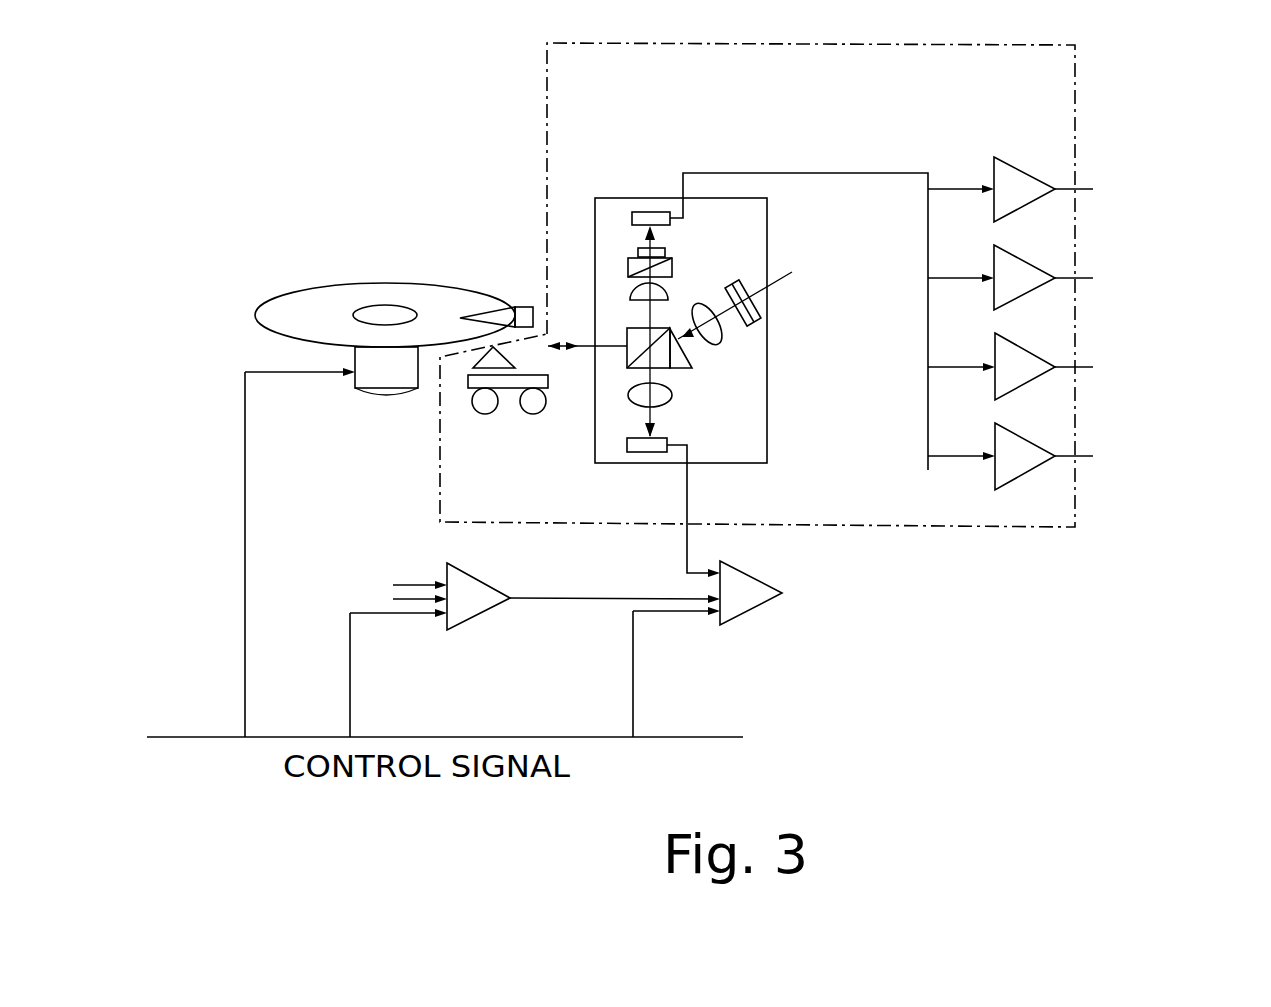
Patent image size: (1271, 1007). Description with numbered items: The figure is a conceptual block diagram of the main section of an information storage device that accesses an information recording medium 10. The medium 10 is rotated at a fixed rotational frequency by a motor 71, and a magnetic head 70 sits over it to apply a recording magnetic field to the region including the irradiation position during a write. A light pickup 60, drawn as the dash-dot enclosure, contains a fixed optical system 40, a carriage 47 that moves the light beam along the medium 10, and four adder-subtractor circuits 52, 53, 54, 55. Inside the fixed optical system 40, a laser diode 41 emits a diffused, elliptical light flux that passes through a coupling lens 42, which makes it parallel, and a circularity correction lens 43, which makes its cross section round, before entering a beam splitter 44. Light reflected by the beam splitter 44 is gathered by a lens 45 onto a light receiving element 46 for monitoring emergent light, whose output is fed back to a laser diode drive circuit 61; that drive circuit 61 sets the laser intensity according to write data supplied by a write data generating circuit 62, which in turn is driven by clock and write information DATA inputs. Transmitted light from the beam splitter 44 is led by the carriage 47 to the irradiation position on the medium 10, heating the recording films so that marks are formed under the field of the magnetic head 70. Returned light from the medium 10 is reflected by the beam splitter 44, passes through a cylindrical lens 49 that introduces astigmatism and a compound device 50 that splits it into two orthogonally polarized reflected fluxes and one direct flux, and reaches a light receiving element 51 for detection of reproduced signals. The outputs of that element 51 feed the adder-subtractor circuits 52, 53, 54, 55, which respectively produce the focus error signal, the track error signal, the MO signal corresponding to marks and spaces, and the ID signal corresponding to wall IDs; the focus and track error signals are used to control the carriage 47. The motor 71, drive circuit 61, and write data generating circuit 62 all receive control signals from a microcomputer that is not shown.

The information recording medium 10 is at (333, 306).
The magnetic head 70 is at (522, 305).
The motor 71 is at (385, 376).
The carriage 47 is at (459, 368).
The fixed optical system 40 is at (740, 212).
The laser diode 41 is at (776, 290).
The coupling lens 42 is at (716, 336).
The circularity correction lens 43 is at (684, 355).
The beam splitter 44 is at (662, 368).
The lens 45 is at (630, 392).
The light receiving element for monitoring emergent light 46 is at (630, 455).
The cylindrical lens 49 is at (636, 293).
The compound device 50 is at (616, 247).
The light receiving element for detection of reproduced signals 51 is at (650, 210).
The adder-subtractor circuit 52 is at (1030, 205).
The adder-subtractor circuit 53 is at (1030, 294).
The adder-subtractor circuit 54 is at (1030, 383).
The adder-subtractor circuit 55 is at (1030, 472).
The light pickup 60 is at (1077, 97).
The laser diode drive circuit 61 is at (745, 600).
The write data generating circuit 62 is at (478, 600).